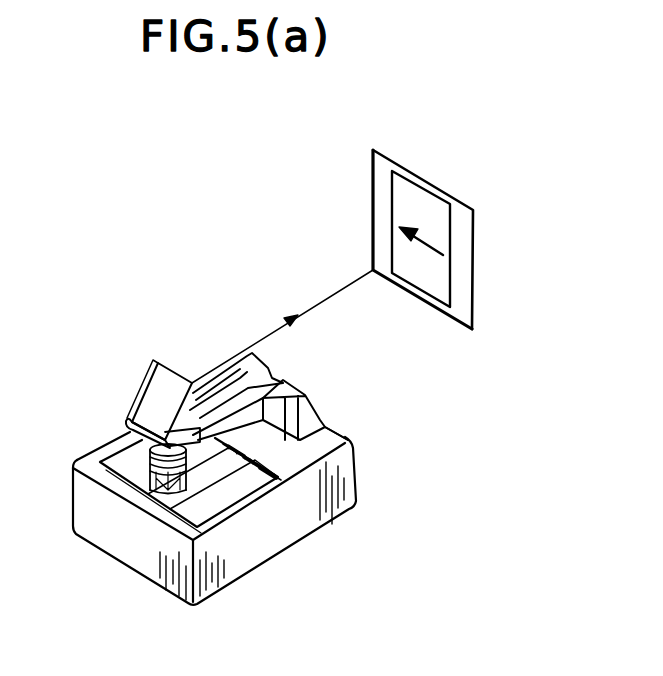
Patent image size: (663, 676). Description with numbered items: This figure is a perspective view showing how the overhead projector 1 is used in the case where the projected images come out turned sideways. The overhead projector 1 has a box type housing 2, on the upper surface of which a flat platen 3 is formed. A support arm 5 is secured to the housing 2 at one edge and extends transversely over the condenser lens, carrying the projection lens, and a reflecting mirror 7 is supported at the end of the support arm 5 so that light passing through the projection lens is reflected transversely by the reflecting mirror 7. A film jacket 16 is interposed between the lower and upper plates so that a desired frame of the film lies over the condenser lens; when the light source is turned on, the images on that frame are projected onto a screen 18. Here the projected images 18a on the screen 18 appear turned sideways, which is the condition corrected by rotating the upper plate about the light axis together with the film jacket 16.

The overhead projector 1 is at (81, 444).
The box type housing 2 is at (125, 552).
The flat platen 3 is at (339, 441).
The support arm 5 is at (277, 388).
The reflecting mirror 7 is at (148, 393).
The film jacket 16 is at (238, 495).
The screen 18 is at (467, 280).
The projected images 18a is at (451, 227).